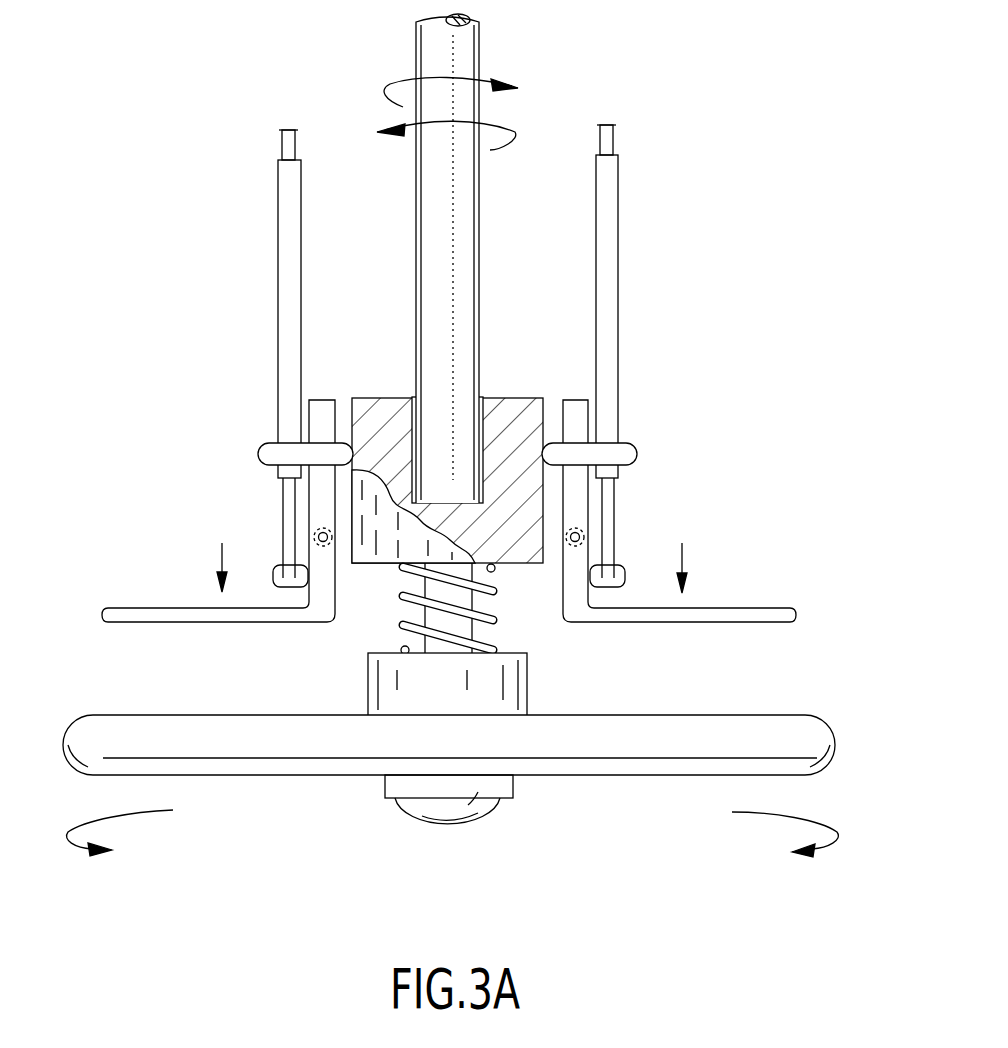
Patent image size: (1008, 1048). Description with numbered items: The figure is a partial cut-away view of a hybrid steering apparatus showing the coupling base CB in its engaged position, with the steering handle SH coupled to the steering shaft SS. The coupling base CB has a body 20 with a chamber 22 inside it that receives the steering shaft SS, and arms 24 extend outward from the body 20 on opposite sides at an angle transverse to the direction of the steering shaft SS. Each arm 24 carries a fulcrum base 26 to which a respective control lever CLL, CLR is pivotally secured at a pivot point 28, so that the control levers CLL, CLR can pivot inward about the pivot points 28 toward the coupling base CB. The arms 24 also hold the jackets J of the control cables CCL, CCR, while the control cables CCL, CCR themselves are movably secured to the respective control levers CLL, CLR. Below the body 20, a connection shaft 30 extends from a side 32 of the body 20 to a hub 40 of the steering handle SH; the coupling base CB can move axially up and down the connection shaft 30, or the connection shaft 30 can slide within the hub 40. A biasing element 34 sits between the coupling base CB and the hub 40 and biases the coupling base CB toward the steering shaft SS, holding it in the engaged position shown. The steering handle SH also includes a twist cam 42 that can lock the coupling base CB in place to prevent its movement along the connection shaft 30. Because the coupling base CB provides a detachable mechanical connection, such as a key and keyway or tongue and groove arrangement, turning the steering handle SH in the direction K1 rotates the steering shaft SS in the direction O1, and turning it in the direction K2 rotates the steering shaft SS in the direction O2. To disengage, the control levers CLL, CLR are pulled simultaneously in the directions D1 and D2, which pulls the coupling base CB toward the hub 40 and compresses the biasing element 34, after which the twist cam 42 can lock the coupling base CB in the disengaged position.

The body 20 is at (497, 396).
The chamber 22 is at (408, 384).
The arms 24 is at (256, 453).
The fulcrum base 26 is at (322, 398).
The pivot points 28 is at (318, 537).
The connection shaft 30 is at (437, 613).
The side 32 is at (372, 565).
The biasing element 34 is at (493, 621).
The hub 40 is at (528, 690).
The twist cam 42 is at (477, 822).
The steering shaft SS is at (463, 40).
The coupling base CB is at (550, 385).
The jackets J is at (282, 242).
The left control cable CCL is at (284, 140).
The right control cable CCR is at (612, 142).
The left control lever CLL is at (112, 607).
The right control lever CLR is at (790, 608).
The steering handle SH is at (812, 760).
The rotation direction O1 is at (398, 84).
The rotation direction O2 is at (512, 137).
The pulling direction D1 is at (687, 557).
The pulling direction D2 is at (218, 556).
The turning direction K1 is at (758, 815).
The turning direction K2 is at (147, 812).